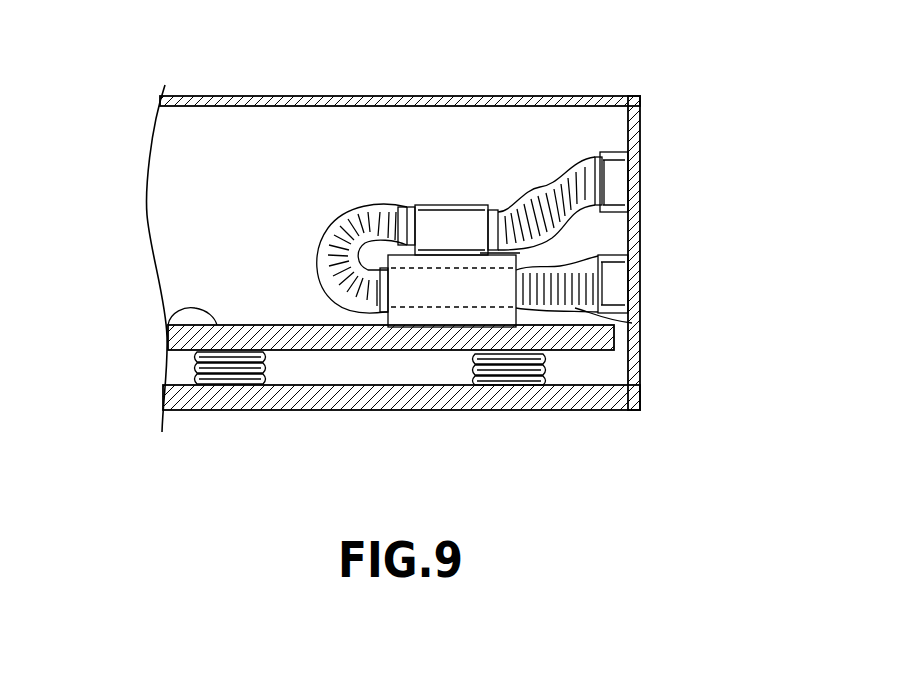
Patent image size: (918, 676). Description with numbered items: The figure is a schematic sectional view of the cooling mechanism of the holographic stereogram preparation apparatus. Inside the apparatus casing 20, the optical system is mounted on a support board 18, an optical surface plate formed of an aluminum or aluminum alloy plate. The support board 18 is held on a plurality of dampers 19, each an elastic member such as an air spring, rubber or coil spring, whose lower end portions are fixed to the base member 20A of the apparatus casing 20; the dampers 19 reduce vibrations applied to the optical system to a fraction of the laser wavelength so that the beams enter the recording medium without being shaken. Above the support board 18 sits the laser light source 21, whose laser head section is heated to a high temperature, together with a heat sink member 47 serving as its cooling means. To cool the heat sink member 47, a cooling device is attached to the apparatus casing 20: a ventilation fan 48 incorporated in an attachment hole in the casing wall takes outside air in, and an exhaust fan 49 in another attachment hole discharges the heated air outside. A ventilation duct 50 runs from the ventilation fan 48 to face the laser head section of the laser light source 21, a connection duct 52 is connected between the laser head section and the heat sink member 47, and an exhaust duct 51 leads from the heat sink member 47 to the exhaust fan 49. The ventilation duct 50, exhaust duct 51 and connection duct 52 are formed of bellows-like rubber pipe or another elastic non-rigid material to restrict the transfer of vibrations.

The support board 18 is at (168, 313).
The damper 19 is at (233, 375).
The apparatus casing 20 is at (147, 210).
The base member 20A is at (578, 400).
The laser light source 21 is at (438, 205).
The heat sink member 47 is at (423, 313).
The ventilation fan 48 is at (610, 152).
The exhaust fan 49 is at (616, 328).
The ventilation duct 50 is at (540, 185).
The exhaust duct 51 is at (632, 323).
The connection duct 52 is at (333, 218).